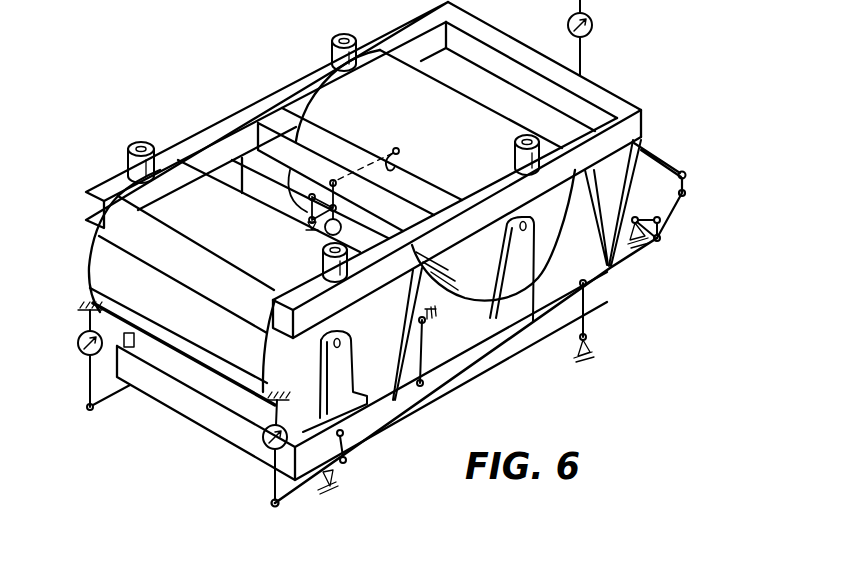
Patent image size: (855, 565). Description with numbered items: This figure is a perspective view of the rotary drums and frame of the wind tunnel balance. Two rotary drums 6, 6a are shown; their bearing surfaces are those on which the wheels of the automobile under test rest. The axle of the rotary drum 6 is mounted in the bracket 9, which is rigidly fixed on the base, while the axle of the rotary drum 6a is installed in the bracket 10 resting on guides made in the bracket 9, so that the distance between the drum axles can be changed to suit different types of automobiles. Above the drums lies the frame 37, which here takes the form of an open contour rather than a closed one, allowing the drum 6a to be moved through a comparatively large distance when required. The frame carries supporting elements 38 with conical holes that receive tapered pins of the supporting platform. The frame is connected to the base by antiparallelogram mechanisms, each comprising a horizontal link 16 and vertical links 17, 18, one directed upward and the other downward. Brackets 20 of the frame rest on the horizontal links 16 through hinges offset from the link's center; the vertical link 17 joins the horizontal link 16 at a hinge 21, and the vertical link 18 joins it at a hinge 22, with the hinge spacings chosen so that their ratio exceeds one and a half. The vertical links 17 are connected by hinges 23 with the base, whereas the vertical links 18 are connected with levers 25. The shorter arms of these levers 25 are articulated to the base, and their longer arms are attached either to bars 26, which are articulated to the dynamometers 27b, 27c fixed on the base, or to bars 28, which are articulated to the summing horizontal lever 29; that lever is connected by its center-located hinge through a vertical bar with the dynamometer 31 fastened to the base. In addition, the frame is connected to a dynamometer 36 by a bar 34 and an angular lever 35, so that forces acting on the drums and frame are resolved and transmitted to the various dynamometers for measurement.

The rotary drum 6 is at (337, 83).
The rotary drum 6a is at (115, 262).
The bracket 9 is at (473, 363).
The bracket 10 is at (347, 408).
The horizontal link 16 is at (377, 420).
The vertical link 17 is at (425, 323).
The vertical link 18 is at (345, 464).
The bracket 20 is at (400, 302).
The hinge 21 is at (580, 285).
The hinge 22 is at (660, 240).
The hinge 23 is at (586, 340).
The lever 25 is at (297, 493).
The bar 26 is at (272, 480).
The dynamometer 27b is at (267, 449).
The dynamometer 27c is at (78, 343).
The bar 28 is at (686, 175).
The summing horizontal lever 29 is at (652, 157).
The dynamometer 31 is at (592, 27).
The bar 34 is at (396, 148).
The angular lever 35 is at (300, 208).
The dynamometer 36 is at (342, 227).
The frame 37 is at (622, 106).
The supporting element 38 is at (148, 141).